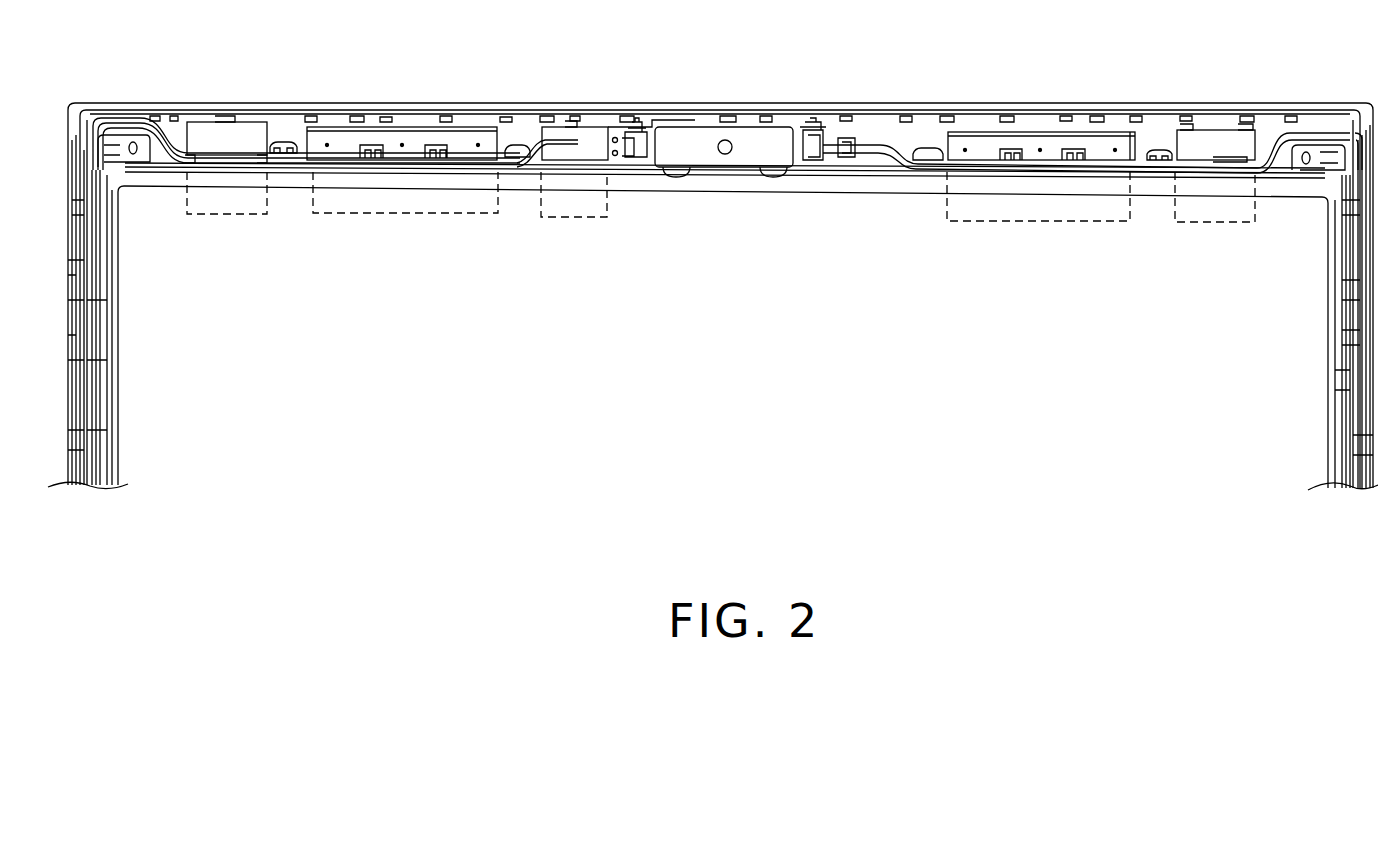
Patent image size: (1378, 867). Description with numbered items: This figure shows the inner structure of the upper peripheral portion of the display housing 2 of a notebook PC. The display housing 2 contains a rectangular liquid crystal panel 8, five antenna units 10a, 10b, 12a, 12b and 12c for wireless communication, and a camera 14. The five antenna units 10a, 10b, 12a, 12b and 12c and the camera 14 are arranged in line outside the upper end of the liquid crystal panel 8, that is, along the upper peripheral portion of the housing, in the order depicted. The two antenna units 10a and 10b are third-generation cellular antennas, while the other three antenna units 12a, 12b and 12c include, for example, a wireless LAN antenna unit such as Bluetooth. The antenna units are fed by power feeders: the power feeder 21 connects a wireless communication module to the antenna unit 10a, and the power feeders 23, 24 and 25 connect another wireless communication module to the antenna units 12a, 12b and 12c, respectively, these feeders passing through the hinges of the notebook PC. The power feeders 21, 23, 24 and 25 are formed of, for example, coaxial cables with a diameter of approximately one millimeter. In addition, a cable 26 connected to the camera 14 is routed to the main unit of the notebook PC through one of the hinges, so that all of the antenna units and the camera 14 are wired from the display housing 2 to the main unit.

The display housing 2 is at (484, 90).
The liquid crystal panel 8 is at (880, 164).
The antenna unit 10a is at (345, 135).
The antenna unit 10b is at (980, 145).
The antenna unit 12a is at (224, 116).
The antenna unit 12b is at (597, 133).
The antenna unit 12c is at (1208, 136).
The camera 14 is at (744, 130).
The power feeder 21 is at (262, 112).
The power feeder 23 is at (148, 114).
The power feeder 24 is at (520, 172).
The power feeder 25 is at (1292, 116).
The cable 26 is at (1158, 172).